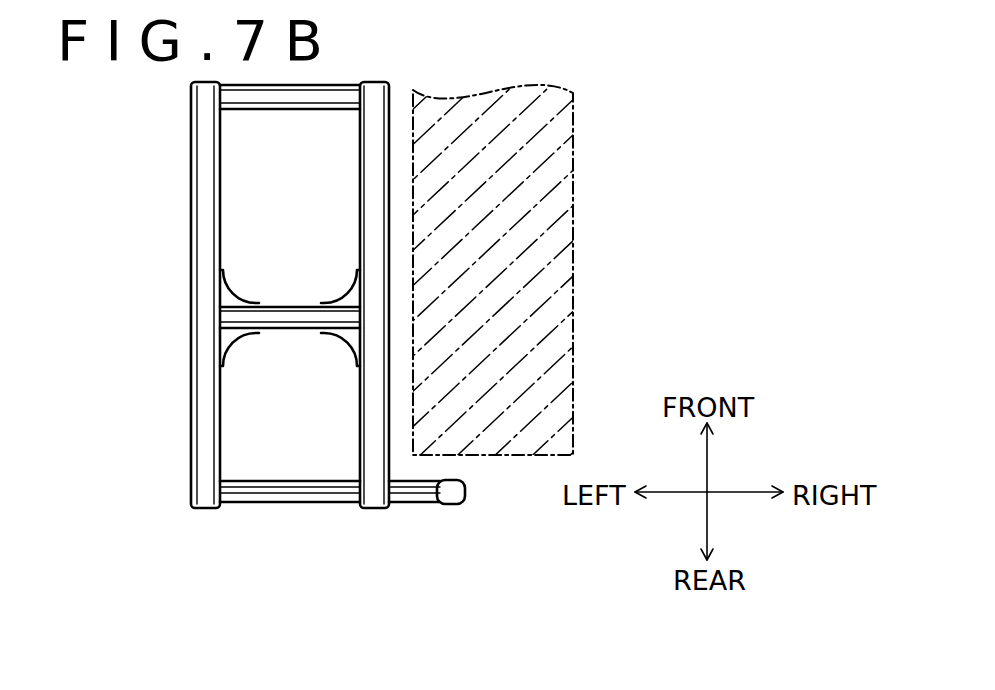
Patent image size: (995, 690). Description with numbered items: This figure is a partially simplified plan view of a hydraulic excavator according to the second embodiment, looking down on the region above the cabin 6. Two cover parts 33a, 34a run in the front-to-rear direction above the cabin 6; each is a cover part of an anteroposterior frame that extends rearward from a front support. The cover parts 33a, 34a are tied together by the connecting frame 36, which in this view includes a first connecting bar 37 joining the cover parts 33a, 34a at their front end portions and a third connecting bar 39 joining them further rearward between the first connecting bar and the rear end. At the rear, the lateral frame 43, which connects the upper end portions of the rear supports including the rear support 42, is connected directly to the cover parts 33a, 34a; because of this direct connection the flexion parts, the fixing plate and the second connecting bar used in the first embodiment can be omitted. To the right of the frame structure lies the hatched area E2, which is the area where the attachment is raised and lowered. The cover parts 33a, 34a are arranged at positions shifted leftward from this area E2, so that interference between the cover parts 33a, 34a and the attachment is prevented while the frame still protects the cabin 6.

The cabin 6 is at (298, 333).
The cover part 33a is at (208, 293).
The cover part 34a is at (375, 425).
The connecting frame 36 is at (290, 225).
The first connecting bar 37 is at (288, 100).
The third connecting bar 39 is at (286, 320).
The rear support 42 is at (454, 497).
The lateral frame 43 is at (413, 490).
The area where the attachment is raised and lowered E2 is at (575, 175).